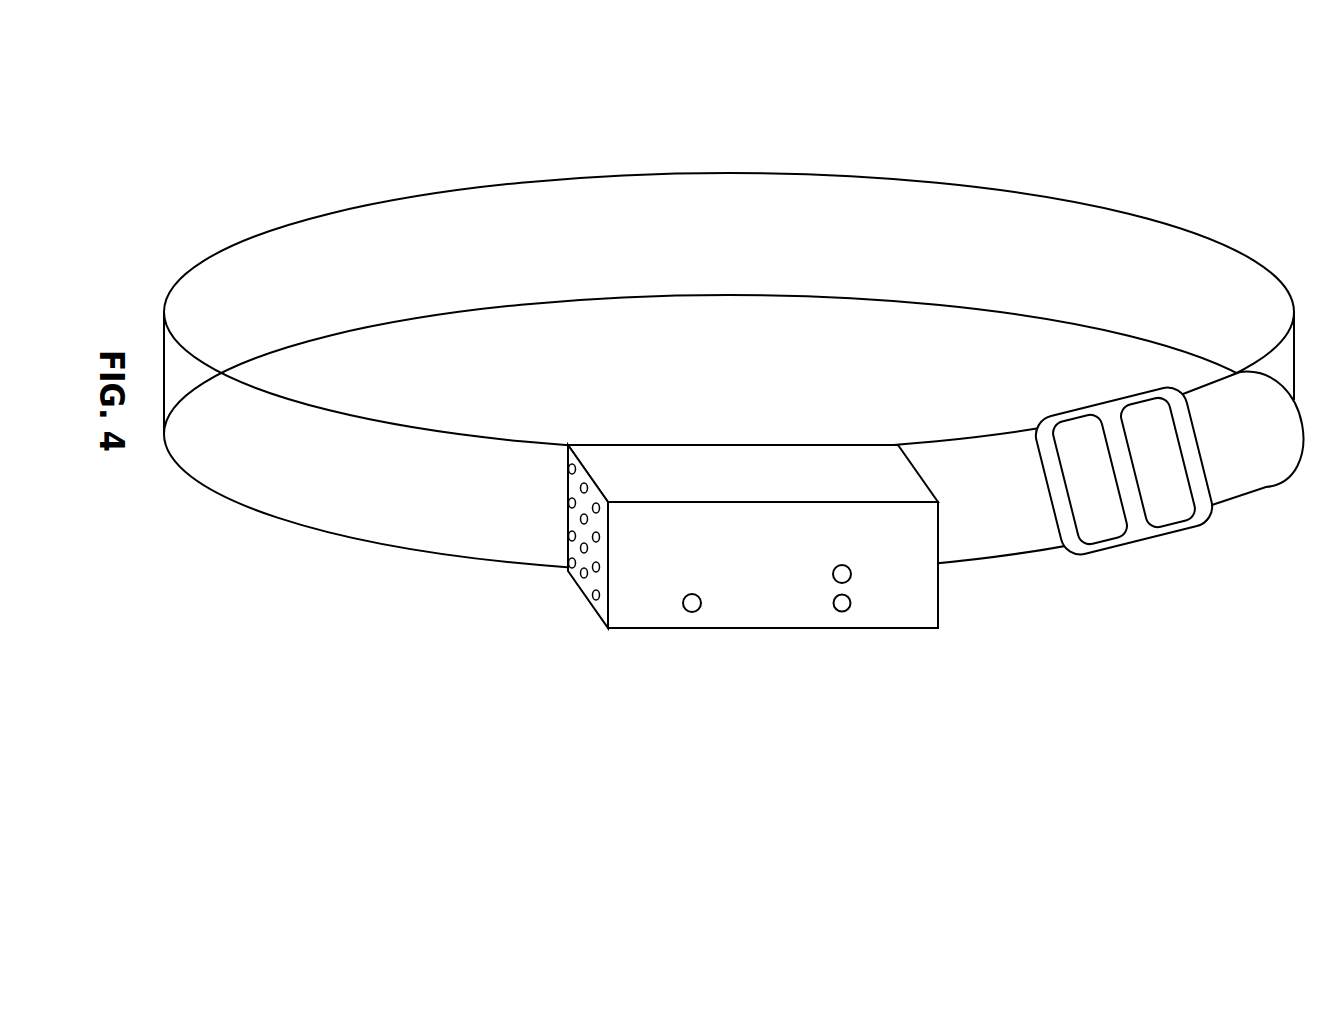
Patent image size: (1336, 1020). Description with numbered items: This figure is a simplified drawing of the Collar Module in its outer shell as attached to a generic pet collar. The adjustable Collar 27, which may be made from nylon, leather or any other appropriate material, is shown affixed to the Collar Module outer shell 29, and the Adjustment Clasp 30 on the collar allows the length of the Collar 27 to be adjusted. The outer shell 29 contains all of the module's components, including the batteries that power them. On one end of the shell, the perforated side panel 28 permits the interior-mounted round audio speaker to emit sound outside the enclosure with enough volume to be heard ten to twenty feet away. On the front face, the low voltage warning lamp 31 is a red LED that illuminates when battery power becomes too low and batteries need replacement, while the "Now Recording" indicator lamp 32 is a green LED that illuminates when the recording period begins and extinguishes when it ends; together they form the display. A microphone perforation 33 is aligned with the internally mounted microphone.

The collar 27 is at (605, 167).
The perforated side panel 28 is at (575, 522).
The Collar Module outer shell 29 is at (735, 463).
The adjustment clasp 30 is at (1055, 392).
The low voltage warning lamp 31 is at (678, 613).
The "Now Recording" indicator lamp 32 is at (832, 582).
The microphone perforation 33 is at (851, 614).